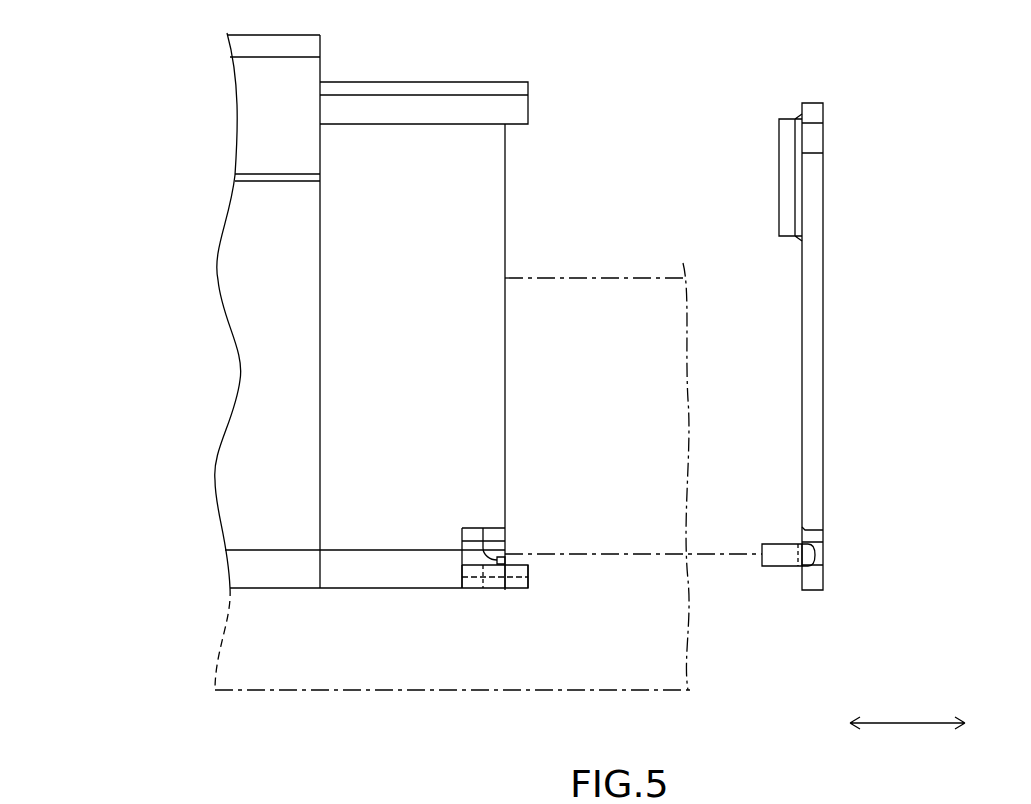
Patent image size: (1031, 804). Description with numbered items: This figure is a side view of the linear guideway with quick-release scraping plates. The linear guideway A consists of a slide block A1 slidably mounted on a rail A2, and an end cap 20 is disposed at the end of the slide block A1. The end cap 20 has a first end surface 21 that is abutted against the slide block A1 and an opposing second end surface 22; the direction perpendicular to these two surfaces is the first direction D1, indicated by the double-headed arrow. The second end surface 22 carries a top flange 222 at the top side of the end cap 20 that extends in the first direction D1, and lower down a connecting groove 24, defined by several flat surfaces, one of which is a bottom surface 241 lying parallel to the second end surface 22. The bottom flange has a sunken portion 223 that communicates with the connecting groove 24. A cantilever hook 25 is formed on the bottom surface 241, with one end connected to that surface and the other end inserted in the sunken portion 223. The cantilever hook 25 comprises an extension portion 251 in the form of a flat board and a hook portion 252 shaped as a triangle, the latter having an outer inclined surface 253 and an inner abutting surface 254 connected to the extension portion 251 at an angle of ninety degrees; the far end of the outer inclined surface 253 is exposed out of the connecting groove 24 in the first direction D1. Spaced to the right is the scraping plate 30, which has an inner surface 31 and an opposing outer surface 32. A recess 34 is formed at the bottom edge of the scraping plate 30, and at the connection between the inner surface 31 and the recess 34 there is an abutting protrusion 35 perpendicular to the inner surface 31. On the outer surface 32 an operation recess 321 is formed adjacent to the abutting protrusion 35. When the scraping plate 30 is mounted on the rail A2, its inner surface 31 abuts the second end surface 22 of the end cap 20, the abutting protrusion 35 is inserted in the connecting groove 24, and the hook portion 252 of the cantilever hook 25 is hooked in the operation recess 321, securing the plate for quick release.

The end cap 20 is at (513, 80).
The first end surface 21 is at (320, 155).
The second end surface 22 is at (505, 148).
The top flange 222 is at (528, 112).
The sunken portion 223 is at (517, 590).
The connecting groove 24 is at (470, 530).
The bottom surface 241 is at (462, 540).
The outer inclined surface 253 is at (508, 560).
The inner abutting surface 254 is at (487, 528).
The cantilever hook 25 is at (517, 733).
The extension portion 251 is at (467, 590).
The hook portion 252 is at (498, 590).
The scraping plate 30 is at (833, 112).
The inner surface 31 is at (802, 320).
The outer surface 32 is at (825, 208).
The operation recess 321 is at (812, 553).
The recess 34 is at (812, 585).
The abutting protrusion 35 is at (772, 550).
The linear guideway A is at (141, 455).
The slide block A1 is at (225, 510).
The rail A2 is at (247, 640).
The first direction D1 is at (929, 725).